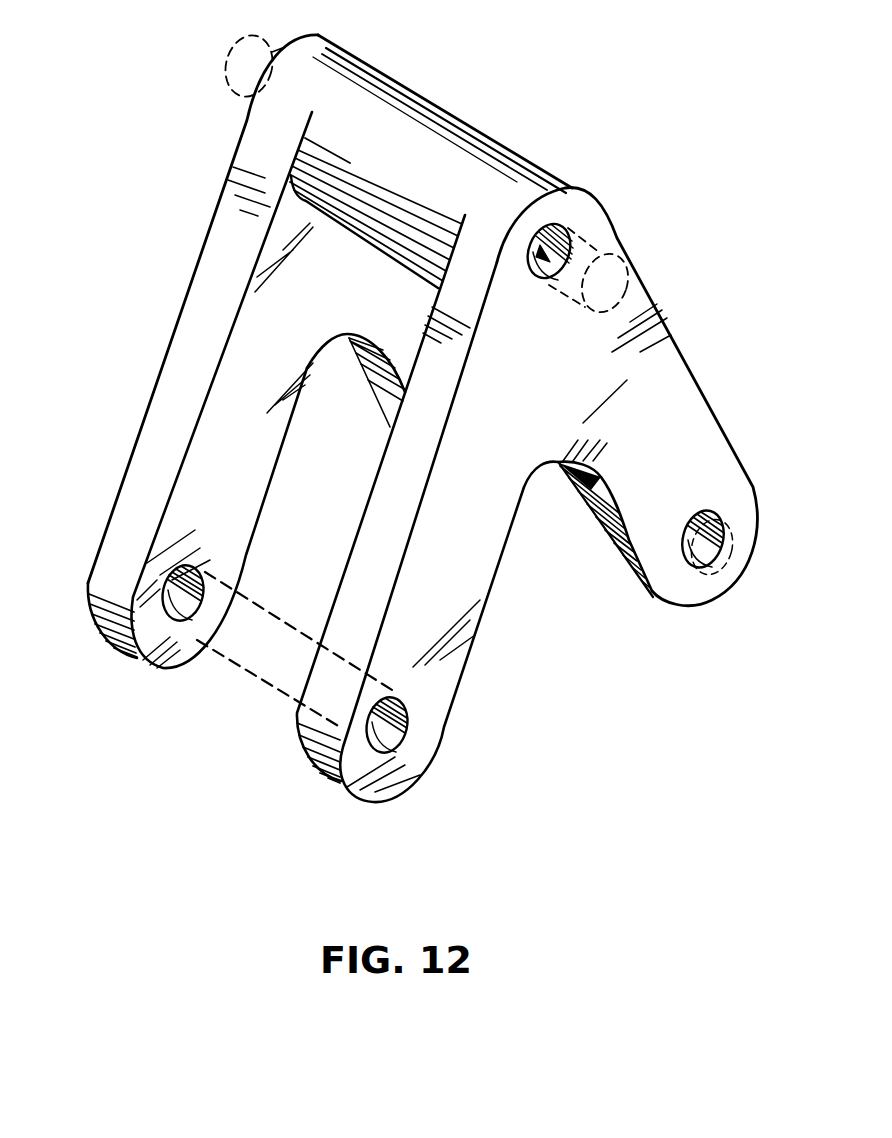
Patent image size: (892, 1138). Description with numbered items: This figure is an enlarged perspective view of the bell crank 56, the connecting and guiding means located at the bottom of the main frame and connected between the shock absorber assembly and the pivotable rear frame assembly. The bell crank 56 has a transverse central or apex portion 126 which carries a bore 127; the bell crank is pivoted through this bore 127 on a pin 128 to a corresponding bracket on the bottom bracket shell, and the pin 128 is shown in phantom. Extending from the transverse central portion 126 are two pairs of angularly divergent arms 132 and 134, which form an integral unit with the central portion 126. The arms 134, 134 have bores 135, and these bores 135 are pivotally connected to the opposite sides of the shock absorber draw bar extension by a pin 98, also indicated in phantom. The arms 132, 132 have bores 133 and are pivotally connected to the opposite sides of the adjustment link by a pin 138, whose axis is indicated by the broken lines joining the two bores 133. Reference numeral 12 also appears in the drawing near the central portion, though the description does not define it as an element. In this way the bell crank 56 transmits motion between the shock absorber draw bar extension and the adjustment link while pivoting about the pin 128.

The bell crank 56 is at (540, 632).
The transverse central portion 126 is at (412, 148).
The bore 127 is at (553, 281).
The pin 128 is at (583, 290).
The pivot shaft 12 is at (535, 262).
The arms 132 is at (268, 458).
The bores 133 is at (185, 596).
The arms 134 is at (402, 325).
The bores 135 is at (712, 532).
The pin 138 is at (253, 667).
The pin 98 is at (733, 544).